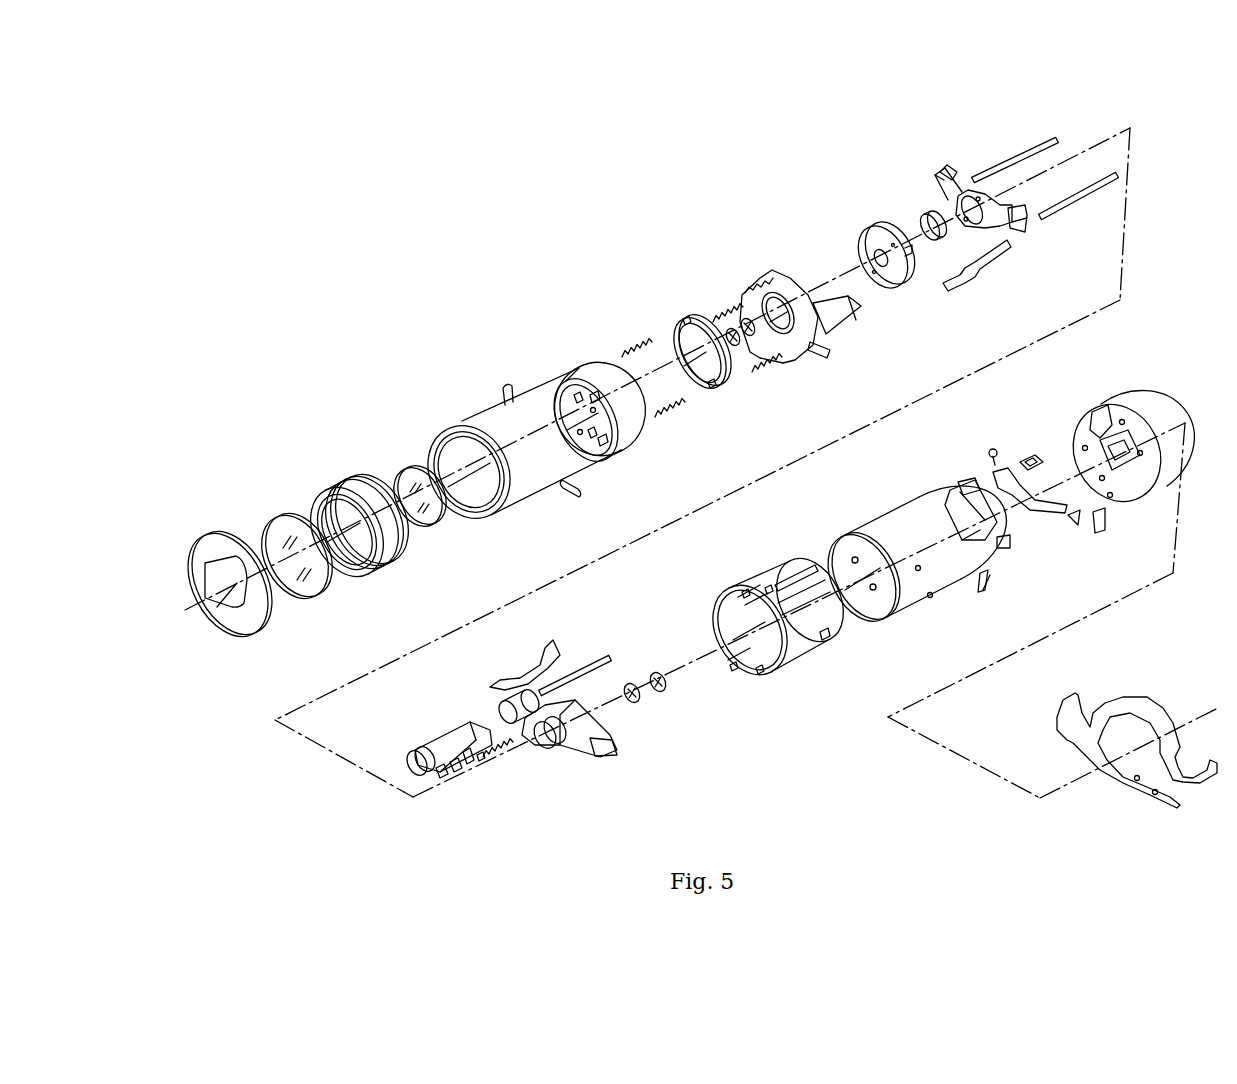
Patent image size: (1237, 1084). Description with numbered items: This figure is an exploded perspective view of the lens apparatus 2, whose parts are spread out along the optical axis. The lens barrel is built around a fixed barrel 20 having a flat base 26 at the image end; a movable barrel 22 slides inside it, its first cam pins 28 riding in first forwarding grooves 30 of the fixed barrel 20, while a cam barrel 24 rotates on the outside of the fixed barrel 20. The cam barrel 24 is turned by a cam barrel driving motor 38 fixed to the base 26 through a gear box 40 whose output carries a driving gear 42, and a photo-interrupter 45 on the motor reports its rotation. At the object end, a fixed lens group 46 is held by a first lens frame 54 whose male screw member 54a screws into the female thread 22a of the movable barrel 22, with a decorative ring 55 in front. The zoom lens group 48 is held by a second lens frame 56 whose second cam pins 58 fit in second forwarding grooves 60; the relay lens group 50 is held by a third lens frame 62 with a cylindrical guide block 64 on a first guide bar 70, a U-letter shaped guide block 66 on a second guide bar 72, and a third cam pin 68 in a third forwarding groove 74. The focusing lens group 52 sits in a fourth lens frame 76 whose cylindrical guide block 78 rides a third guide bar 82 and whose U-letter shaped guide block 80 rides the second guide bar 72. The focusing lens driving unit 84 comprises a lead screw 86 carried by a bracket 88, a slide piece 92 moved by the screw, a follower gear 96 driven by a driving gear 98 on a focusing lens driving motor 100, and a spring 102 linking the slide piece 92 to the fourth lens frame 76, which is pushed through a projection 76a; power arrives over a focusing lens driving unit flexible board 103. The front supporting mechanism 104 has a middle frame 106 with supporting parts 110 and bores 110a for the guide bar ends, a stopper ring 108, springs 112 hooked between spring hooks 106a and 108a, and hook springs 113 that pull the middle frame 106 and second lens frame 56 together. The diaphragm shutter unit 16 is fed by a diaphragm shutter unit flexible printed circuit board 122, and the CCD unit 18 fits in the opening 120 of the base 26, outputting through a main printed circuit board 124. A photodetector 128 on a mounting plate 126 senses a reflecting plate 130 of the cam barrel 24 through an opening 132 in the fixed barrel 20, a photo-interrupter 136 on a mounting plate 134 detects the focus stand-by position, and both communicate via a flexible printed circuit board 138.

The lens apparatus 2 is at (322, 300).
The diaphragm shutter unit 16 is at (860, 250).
The CCD unit 18 is at (1103, 412).
The fixed barrel 20 is at (770, 600).
The movable barrel 22 is at (527, 440).
The female thread 22a is at (433, 443).
The cam barrel 24 is at (875, 533).
The base 26 is at (1128, 416).
The first cam pin 28 is at (568, 486).
The first forwarding groove 30 is at (768, 586).
The cam barrel driving motor 38 is at (988, 582).
The gear box 40 is at (952, 498).
The driving gear 42 is at (968, 482).
The photo-interrupter 45 is at (1005, 550).
The fixed lens group 46 is at (267, 538).
The zoom lens group 48 is at (750, 337).
The relay lens group 50 is at (922, 225).
The focusing lens group 52 is at (660, 693).
The first lens frame 54 is at (337, 487).
The male screw member 54a is at (360, 477).
The decorative ring 55 is at (213, 547).
The second lens frame 56 is at (793, 285).
The second cam pin 58 is at (758, 280).
The second forwarding groove 60 is at (718, 616).
The third lens frame 62 is at (958, 205).
The cylindrical guide block 64 is at (938, 195).
The U-letter shaped guide block 66 is at (1022, 232).
The third cam pin 68 is at (947, 168).
The first guide bar 70 is at (992, 175).
The second guide bar 72 is at (1076, 198).
The third forwarding groove 74 is at (793, 580).
The fourth lens frame 76 is at (575, 750).
The projection 76a is at (570, 715).
The cylindrical guide block 78 is at (500, 706).
The U-letter shaped guide block 80 is at (618, 752).
The third guide bar 82 is at (585, 665).
The focusing lens driving unit 84 is at (405, 735).
The lead screw 86 is at (495, 762).
The bracket 88 is at (446, 732).
The slide piece 92 is at (467, 765).
The follower gear 96 is at (406, 765).
The driving gear 98 is at (430, 775).
The focusing lens driving motor 100 is at (452, 770).
The spring 102 is at (498, 756).
The focusing lens driving unit flexible board 103 is at (512, 664).
The front supporting mechanism 104 is at (590, 297).
The middle frame 106 is at (598, 375).
The spring hook 106a is at (577, 372).
The stopper ring 108 is at (678, 335).
The spring hook 108a is at (682, 322).
The supporting part 110 is at (577, 383).
The bore 110a is at (567, 393).
The spring 112 is at (622, 352).
The hook spring 113 is at (727, 315).
The opening 120 is at (1103, 477).
The diaphragm shutter unit flexible printed circuit board 122 is at (972, 283).
The main printed circuit board 124 is at (1078, 745).
The mounting plate 126 is at (1100, 532).
The photodetector 128 is at (1073, 525).
The reflecting plate 130 is at (984, 595).
The opening 132 is at (832, 640).
The mounting plate 134 is at (1030, 456).
The photo-interrupter 136 is at (989, 451).
The flexible printed circuit board 138 is at (1033, 513).